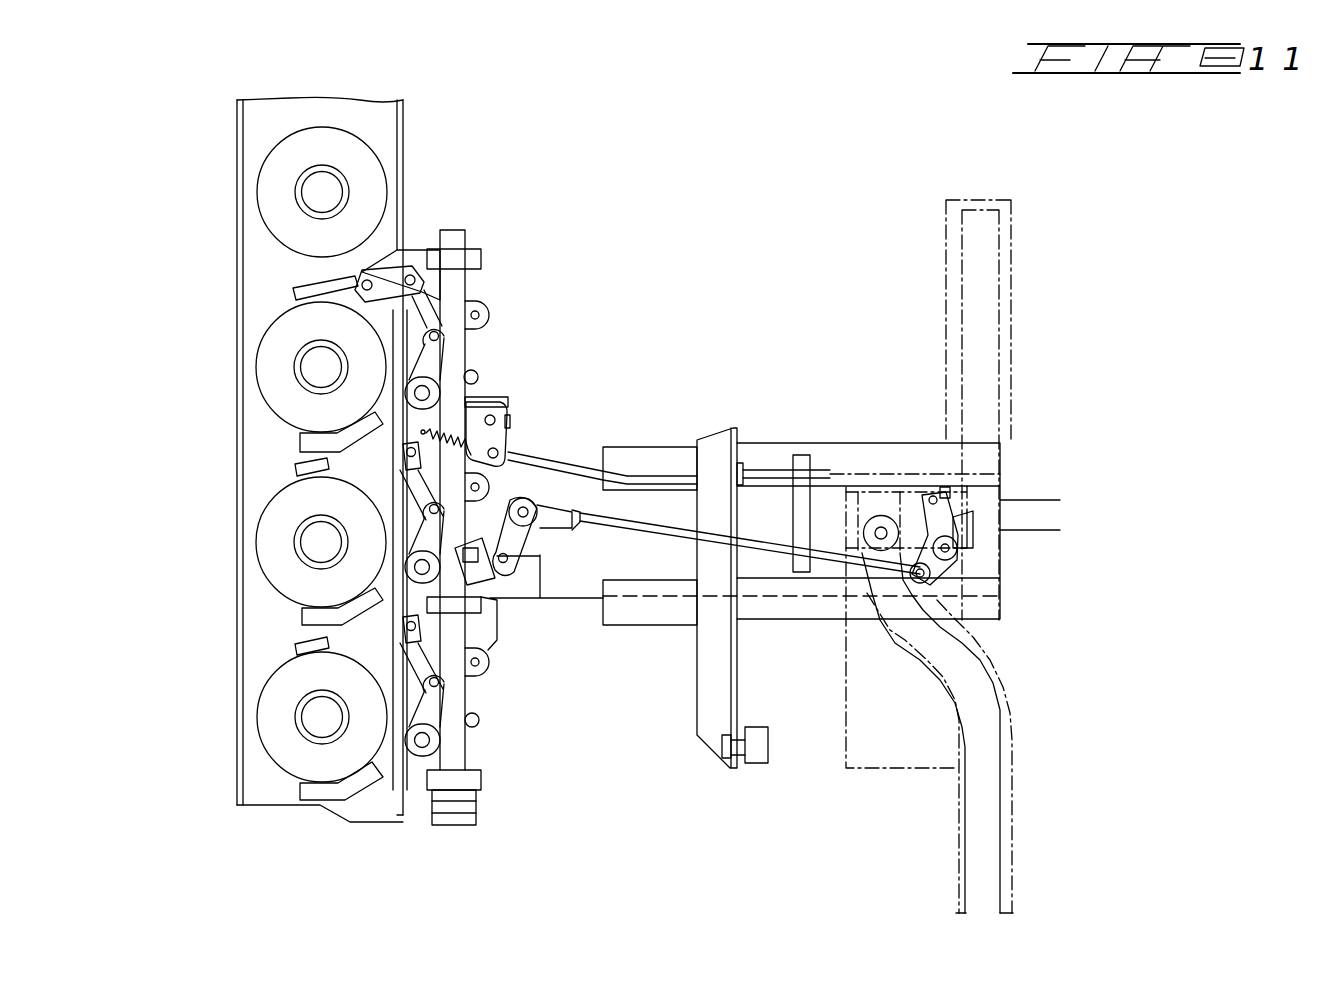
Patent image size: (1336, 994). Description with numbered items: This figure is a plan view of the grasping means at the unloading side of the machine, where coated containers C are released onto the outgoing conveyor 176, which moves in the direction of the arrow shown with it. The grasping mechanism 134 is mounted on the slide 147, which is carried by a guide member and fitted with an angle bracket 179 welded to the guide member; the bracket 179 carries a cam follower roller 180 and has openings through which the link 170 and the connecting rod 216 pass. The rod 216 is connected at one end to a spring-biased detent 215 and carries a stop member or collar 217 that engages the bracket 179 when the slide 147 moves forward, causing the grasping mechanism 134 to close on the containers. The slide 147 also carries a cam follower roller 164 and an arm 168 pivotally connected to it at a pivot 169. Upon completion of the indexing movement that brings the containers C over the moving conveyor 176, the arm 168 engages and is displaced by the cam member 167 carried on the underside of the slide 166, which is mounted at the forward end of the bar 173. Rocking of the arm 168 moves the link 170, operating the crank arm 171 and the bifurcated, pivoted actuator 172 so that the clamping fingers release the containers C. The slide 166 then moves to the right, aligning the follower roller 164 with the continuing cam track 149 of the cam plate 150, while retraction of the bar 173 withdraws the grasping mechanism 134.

The conveyor 176 is at (262, 117).
The containers C is at (283, 195).
The grasping mechanism 134 is at (272, 457).
The spring-biased detent 215 is at (510, 420).
The connecting rod 216 is at (558, 463).
The stop member or collar 217 is at (745, 463).
The slide 147 is at (582, 587).
The angle bracket 179 is at (707, 708).
The cam follower roller 180 is at (758, 753).
The link 170 is at (716, 540).
The crank arm 171 is at (515, 533).
The bifurcated pivoted actuator 172 is at (495, 580).
The cam follower roller 164 is at (875, 515).
The slide 166 is at (905, 492).
The pivot 169 is at (937, 497).
The cam member 167 is at (955, 545).
The arm 168 is at (928, 575).
The bar 173 is at (1062, 512).
The cam track 149 is at (995, 822).
The cam plate 150 is at (904, 750).